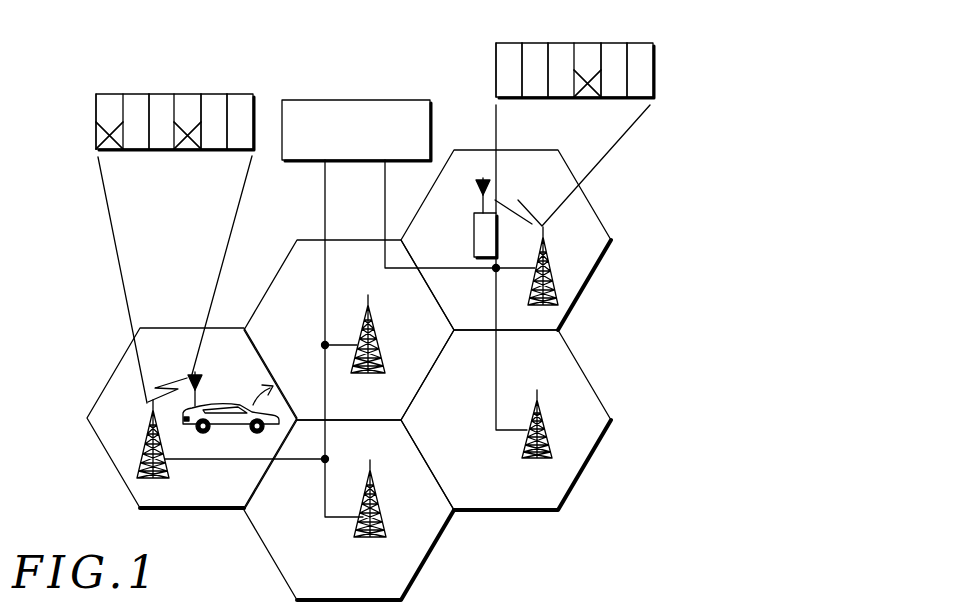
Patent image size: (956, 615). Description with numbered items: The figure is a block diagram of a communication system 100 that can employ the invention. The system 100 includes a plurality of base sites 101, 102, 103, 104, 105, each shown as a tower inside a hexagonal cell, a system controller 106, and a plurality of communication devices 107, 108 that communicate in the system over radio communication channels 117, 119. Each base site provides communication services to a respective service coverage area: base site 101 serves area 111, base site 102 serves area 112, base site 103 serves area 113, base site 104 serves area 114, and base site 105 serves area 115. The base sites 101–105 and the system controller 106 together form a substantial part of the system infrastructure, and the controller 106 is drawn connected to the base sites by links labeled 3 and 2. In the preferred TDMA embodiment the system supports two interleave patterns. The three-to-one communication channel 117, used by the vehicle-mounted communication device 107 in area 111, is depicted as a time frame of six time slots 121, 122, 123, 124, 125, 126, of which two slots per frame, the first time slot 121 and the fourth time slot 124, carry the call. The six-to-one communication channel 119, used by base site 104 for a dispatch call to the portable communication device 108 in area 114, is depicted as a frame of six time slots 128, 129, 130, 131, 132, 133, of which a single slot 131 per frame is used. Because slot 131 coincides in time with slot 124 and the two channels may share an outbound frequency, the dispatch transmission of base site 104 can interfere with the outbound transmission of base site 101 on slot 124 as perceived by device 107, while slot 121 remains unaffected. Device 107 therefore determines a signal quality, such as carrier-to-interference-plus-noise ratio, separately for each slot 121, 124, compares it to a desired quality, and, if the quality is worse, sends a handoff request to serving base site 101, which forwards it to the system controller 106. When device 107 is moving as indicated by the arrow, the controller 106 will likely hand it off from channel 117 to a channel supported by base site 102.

The communication system 100 is at (79, 272).
The base site 101 is at (158, 472).
The base site 102 is at (376, 373).
The base site 103 is at (377, 540).
The base site 104 is at (548, 258).
The base site 105 is at (548, 458).
The system controller 106 is at (390, 100).
The communication device 107 is at (246, 428).
The communication device 108 is at (474, 231).
The service coverage area 111 is at (153, 510).
The service coverage area 112 is at (297, 242).
The service coverage area 113 is at (422, 572).
The service coverage area 114 is at (607, 223).
The service coverage area 115 is at (503, 512).
The communication channel 117 is at (172, 38).
The communication channel 119 is at (683, 49).
The time slot 121 is at (103, 94).
The time slot 122 is at (136, 150).
The time slot 123 is at (167, 94).
The time slot 124 is at (198, 150).
The time slot 125 is at (219, 94).
The time slot 126 is at (250, 150).
The time slot 128 is at (505, 43).
The time slot 129 is at (535, 97).
The time slot 130 is at (568, 43).
The time slot 131 is at (587, 97).
The time slot 132 is at (622, 43).
The time slot 133 is at (648, 97).
The link 2 is at (375, 214).
The link 3 is at (316, 214).